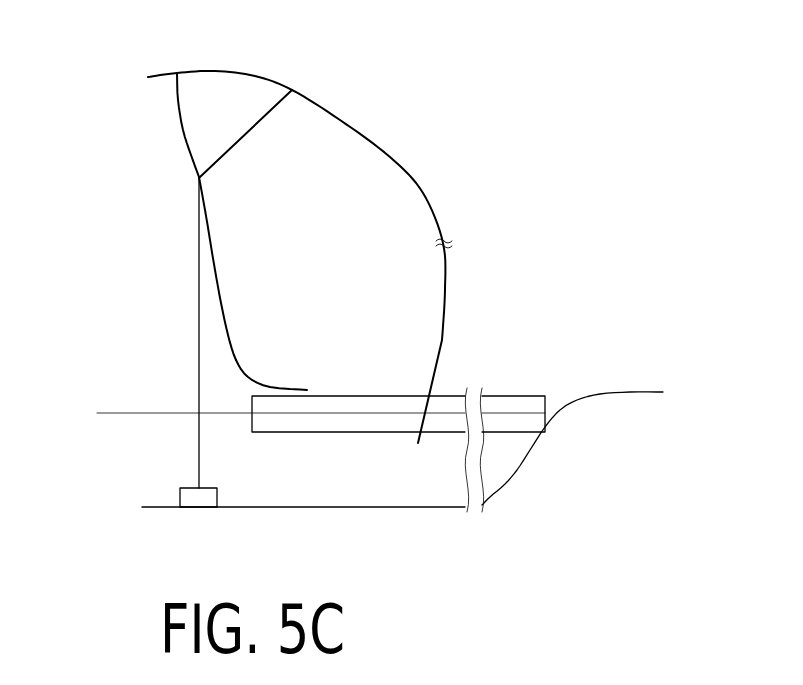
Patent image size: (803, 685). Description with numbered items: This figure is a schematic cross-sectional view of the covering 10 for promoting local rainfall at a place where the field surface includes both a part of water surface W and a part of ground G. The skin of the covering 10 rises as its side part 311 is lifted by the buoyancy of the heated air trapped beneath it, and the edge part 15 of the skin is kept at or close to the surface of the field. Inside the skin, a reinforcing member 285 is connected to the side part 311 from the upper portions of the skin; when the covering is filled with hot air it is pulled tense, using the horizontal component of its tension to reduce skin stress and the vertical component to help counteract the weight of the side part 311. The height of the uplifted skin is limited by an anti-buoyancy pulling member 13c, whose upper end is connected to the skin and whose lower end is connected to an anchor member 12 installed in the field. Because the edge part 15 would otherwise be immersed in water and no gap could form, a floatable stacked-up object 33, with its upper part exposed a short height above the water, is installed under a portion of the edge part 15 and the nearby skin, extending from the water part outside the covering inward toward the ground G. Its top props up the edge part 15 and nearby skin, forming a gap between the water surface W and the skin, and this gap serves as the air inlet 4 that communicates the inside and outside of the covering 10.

The covering 10 is at (390, 157).
The reinforcing member 285 is at (255, 123).
The side part 311 is at (180, 132).
The edge part 15 is at (250, 373).
The anti-buoyancy pulling member 13c is at (199, 317).
The anchor member 12 is at (235, 483).
The air inlet 4 is at (290, 394).
The floatable stacked-up object 33 is at (282, 425).
The water surface W is at (114, 413).
The ground G is at (645, 391).